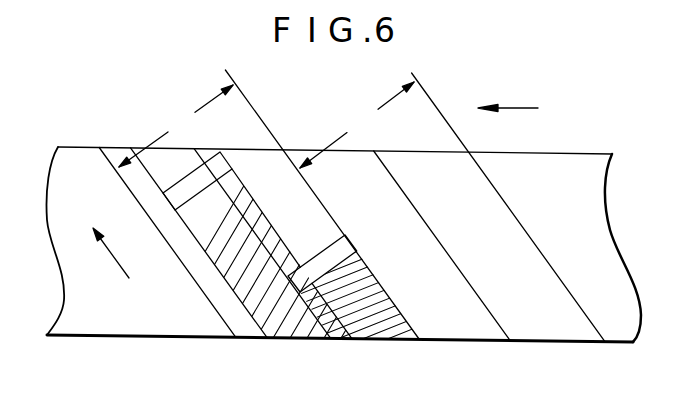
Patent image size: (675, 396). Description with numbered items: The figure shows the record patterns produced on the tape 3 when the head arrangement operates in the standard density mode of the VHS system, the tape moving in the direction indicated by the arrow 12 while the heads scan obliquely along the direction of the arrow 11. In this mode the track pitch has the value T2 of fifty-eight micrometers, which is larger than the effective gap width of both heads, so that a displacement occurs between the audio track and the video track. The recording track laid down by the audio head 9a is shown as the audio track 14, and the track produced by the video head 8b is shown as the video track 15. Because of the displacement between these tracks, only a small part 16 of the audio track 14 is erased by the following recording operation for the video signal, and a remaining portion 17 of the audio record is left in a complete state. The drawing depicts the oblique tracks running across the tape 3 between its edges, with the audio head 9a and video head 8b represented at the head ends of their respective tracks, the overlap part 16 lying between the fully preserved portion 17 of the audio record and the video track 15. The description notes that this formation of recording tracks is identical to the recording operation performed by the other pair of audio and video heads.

The roll / web body 3 is at (53, 243).
The video head 8b is at (313, 258).
The audio head 9a is at (174, 187).
The feed direction arrow 11 is at (127, 276).
The web travel direction arrow 12 is at (522, 108).
The recording track produced by the audio head 14 is at (223, 275).
The recording track produced by the video head 15 is at (383, 331).
The small part of the audio track 16 is at (355, 343).
The remaining portion of the audio record 17 is at (328, 343).
The track pitch T2 is at (266, 125).